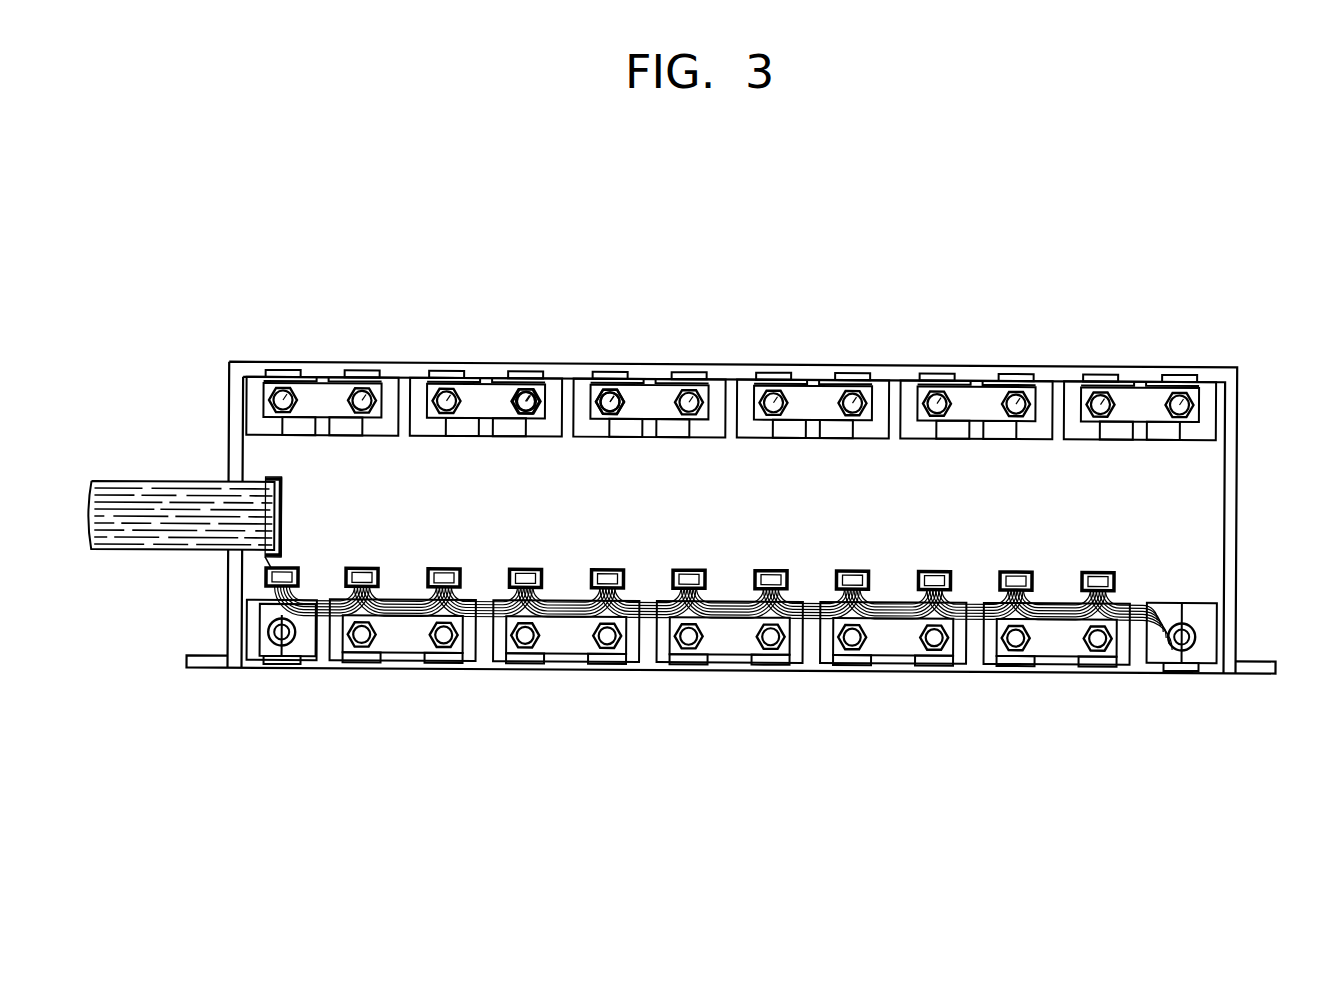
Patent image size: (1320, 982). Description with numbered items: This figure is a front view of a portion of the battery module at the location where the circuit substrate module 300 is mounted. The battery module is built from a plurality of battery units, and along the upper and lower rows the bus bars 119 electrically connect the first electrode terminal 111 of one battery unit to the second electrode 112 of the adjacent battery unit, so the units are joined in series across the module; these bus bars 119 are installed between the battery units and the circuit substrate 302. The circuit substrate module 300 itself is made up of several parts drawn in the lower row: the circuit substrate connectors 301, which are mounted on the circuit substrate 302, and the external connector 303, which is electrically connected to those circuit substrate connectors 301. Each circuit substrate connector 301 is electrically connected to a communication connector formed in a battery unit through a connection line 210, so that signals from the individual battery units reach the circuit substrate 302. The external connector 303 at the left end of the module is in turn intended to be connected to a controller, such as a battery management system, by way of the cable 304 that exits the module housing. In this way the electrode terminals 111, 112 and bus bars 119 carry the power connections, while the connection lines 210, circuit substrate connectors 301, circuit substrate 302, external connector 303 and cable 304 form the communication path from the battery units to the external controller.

The first electrode terminal 111 is at (283, 393).
The second electrode 112 is at (364, 393).
The bus bar 119 is at (651, 392).
The connection line 210 is at (813, 608).
The circuit substrate module 300 is at (342, 629).
The circuit substrate connector 301 is at (349, 589).
The circuit substrate 302 is at (402, 660).
The external connector 303 is at (265, 588).
The cable 304 is at (145, 536).